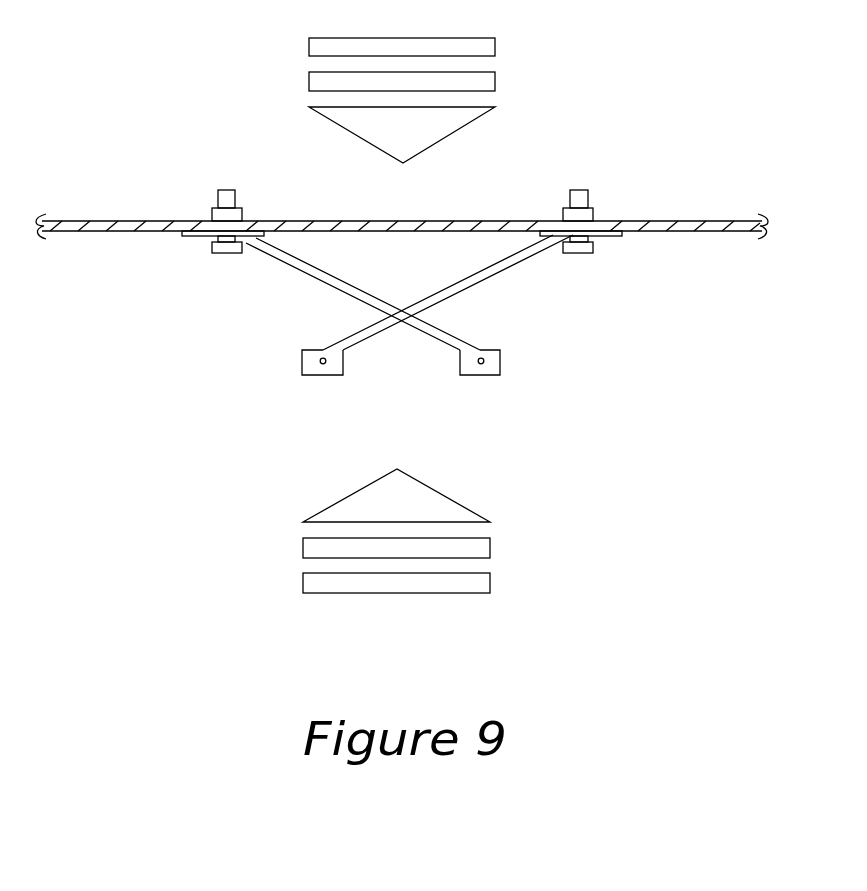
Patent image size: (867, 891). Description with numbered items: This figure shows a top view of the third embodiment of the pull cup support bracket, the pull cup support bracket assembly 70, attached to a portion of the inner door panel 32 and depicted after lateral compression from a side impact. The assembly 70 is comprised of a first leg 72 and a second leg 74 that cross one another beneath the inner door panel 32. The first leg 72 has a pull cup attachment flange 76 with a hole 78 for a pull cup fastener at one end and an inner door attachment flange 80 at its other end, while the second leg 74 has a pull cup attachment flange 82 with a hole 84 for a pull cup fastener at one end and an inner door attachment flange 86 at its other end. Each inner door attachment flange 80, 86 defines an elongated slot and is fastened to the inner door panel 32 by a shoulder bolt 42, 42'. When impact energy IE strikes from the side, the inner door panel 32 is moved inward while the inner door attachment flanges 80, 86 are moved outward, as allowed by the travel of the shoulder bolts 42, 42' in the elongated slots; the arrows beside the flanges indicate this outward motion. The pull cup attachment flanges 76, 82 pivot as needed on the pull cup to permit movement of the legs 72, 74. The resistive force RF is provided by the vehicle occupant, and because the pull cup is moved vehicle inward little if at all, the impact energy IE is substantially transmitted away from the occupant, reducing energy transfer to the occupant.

The inner door panel 32 is at (332, 221).
The impact energy IE is at (448, 135).
The resistive force RF is at (352, 492).
The shoulder bolt 42 is at (224, 252).
The shoulder bolt 42' is at (582, 253).
The inner door attachment flange 86 is at (232, 268).
The inner door attachment flange 80 is at (572, 269).
The pull cup support bracket assembly 70 is at (409, 335).
The first leg 72 is at (358, 337).
The second leg 74 is at (446, 338).
The pull cup attachment flange 76 is at (304, 370).
The hole 78 is at (322, 373).
The pull cup attachment flange 82 is at (499, 372).
The hole 84 is at (482, 369).